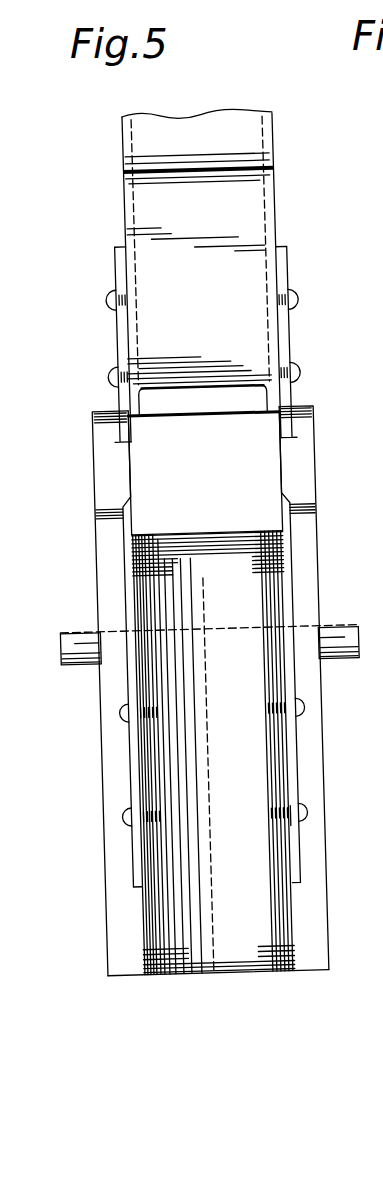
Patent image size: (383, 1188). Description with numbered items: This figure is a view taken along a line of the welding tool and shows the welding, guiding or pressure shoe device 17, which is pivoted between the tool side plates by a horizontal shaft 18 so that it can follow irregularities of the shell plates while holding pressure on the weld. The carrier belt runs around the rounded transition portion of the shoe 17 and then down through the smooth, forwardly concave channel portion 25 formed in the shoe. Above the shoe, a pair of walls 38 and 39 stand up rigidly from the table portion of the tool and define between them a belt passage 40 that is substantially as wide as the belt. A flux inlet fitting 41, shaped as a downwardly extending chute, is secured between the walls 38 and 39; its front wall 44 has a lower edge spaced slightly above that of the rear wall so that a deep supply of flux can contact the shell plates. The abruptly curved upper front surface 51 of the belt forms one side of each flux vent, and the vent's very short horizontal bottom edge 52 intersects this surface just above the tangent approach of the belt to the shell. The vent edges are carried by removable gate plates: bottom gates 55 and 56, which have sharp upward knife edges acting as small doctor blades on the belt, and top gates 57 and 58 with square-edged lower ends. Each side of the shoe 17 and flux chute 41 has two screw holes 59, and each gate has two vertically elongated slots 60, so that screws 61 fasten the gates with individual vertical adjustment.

The welding shoe device 17 is at (174, 991).
The horizontal shaft 18 is at (45, 662).
The channel portion 25 is at (213, 789).
The wall 38 is at (305, 466).
The wall 39 is at (81, 467).
The belt passage 40 is at (206, 489).
The flux inlet fitting 41 is at (274, 218).
The front wall 44 is at (180, 395).
The upper front surface 51 is at (114, 503).
The bottom edge 52 is at (277, 501).
The bottom gate 55 is at (118, 549).
The bottom gate 56 is at (278, 555).
The top gate 57 is at (83, 425).
The top gate 58 is at (281, 429).
The screw hole 59 is at (266, 823).
The vertically elongated slot 60 is at (118, 736).
The screw 61 is at (99, 300).